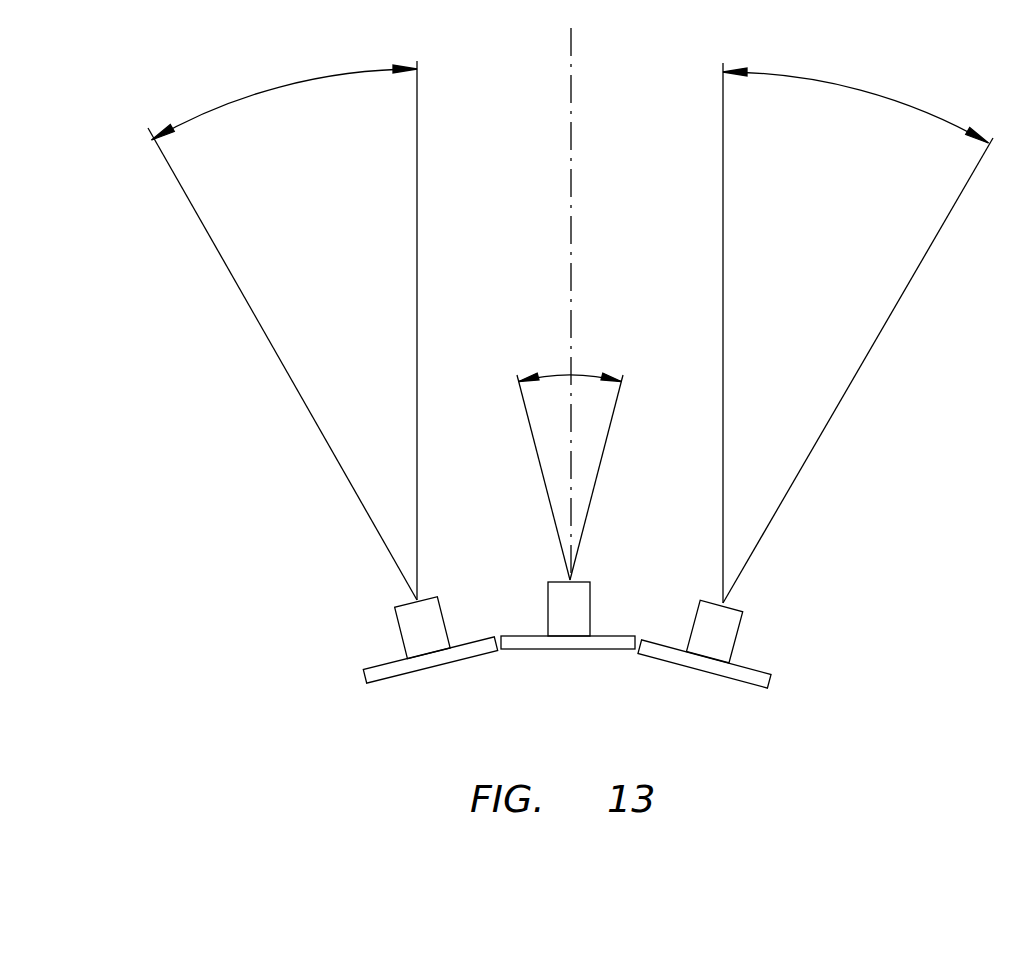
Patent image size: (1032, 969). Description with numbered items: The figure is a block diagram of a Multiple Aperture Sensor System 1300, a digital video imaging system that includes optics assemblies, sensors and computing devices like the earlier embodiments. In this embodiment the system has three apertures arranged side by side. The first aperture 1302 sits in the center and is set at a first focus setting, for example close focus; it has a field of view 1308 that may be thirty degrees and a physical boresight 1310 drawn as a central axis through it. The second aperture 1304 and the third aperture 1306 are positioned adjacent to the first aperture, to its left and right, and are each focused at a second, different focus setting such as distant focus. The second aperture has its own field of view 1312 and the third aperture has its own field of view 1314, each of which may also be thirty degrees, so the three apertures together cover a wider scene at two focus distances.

The Multiple Aperture Sensor System 1300 is at (667, 668).
The first aperture 1302 is at (548, 650).
The second aperture 1304 is at (393, 678).
The third aperture 1306 is at (808, 593).
The field of view 1308 is at (597, 445).
The physical boresight 1310 is at (570, 192).
The field of view 1312 is at (290, 335).
The field of view 1314 is at (833, 388).